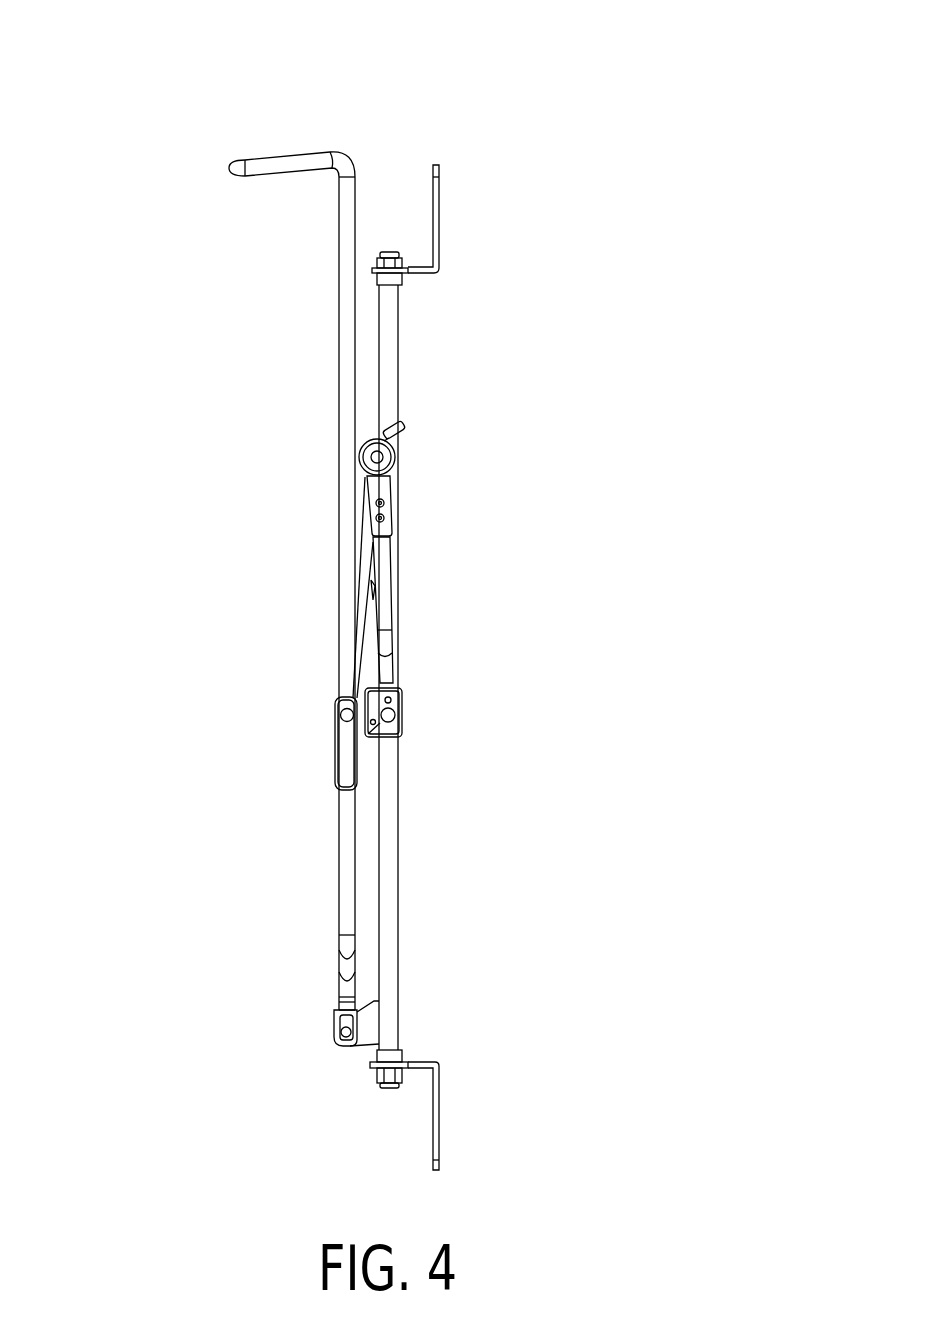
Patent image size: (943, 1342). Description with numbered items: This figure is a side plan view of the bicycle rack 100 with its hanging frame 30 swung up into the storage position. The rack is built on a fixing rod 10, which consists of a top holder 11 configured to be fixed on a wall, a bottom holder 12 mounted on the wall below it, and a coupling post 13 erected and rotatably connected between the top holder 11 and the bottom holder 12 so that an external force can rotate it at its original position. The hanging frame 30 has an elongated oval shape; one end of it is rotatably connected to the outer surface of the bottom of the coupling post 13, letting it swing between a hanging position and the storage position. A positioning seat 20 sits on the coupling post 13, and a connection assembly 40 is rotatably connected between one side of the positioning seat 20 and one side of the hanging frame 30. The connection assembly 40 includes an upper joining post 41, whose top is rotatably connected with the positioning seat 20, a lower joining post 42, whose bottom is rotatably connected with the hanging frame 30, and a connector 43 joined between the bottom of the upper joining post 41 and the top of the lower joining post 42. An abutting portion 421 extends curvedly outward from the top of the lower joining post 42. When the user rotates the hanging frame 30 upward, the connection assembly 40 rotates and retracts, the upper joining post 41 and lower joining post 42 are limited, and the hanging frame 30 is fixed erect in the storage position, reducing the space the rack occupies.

The bicycle rack 100 is at (716, 97).
The fixing rod 10 is at (596, 189).
The top holder 11 is at (437, 223).
The bottom holder 12 is at (435, 1118).
The coupling post 13 is at (388, 345).
The positioning seat 20 is at (403, 728).
The hanging frame 30 is at (284, 163).
The connection assembly 40 is at (172, 579).
The upper joining post 41 is at (380, 598).
The lower joining post 42 is at (365, 573).
The abutting portion 421 is at (380, 421).
The connector 43 is at (398, 457).